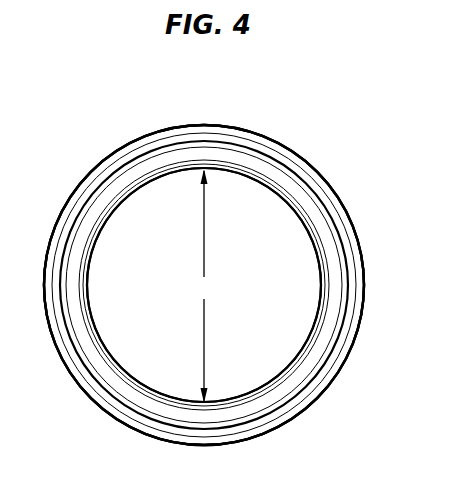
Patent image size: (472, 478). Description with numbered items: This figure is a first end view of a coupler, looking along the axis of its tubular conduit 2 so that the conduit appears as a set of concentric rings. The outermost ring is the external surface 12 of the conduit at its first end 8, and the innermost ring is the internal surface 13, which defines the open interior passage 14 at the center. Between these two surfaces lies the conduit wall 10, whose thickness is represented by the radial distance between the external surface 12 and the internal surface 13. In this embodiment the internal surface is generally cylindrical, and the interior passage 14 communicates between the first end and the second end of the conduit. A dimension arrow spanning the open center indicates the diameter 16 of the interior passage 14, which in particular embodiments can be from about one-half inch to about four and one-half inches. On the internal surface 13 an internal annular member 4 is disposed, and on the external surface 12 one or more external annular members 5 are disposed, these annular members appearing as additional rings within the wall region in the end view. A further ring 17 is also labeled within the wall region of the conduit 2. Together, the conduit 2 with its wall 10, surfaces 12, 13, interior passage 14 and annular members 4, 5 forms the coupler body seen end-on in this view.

The tubular conduit 2 is at (95, 147).
The internal annular member 4 is at (259, 184).
The external annular member 5 is at (296, 150).
The first end 8 is at (340, 225).
The conduit wall 10 is at (333, 281).
The external surface 12 is at (343, 372).
The internal surface 13 is at (214, 401).
The interior passage 14 is at (126, 297).
The diameter 16 is at (205, 286).
The intermediate layer 17 is at (338, 192).